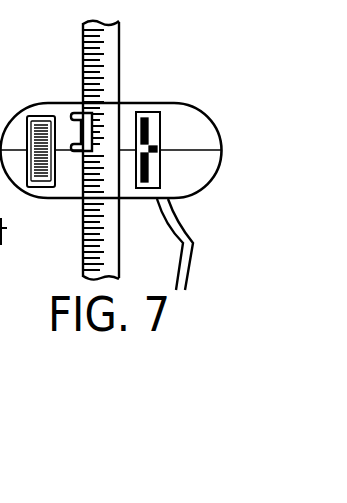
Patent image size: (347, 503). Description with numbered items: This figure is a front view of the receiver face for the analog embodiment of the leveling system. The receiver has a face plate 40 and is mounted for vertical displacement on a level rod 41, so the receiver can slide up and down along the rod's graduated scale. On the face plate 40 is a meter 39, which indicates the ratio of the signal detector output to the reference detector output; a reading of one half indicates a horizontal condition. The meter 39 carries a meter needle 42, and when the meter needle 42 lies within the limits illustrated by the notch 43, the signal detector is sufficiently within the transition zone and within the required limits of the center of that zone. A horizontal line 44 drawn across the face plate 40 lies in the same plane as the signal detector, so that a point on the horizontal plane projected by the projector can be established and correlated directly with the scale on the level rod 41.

The meter 39 is at (160, 128).
The face plate 40 is at (140, 103).
The level rod 41 is at (122, 46).
The meter needle 42 is at (160, 150).
The notch 43 is at (146, 151).
The horizontal line 44 is at (203, 150).